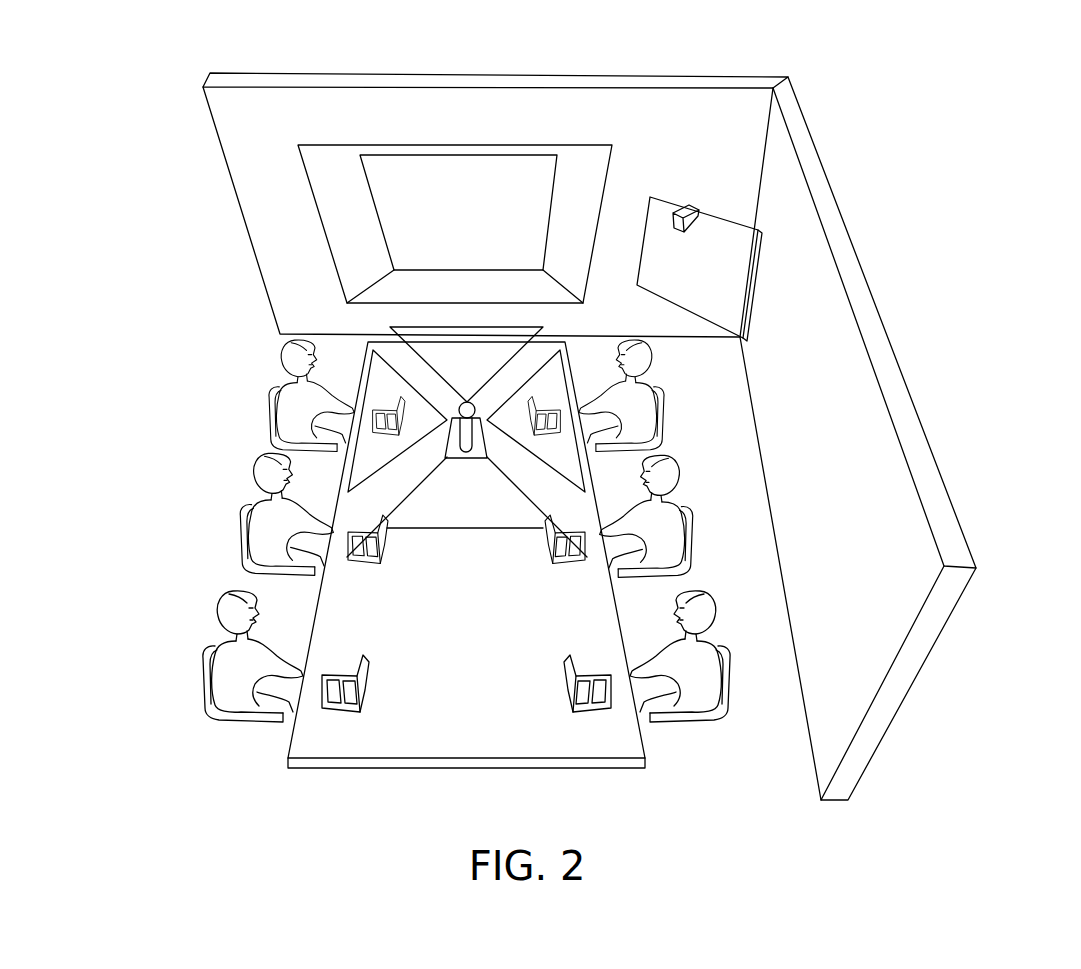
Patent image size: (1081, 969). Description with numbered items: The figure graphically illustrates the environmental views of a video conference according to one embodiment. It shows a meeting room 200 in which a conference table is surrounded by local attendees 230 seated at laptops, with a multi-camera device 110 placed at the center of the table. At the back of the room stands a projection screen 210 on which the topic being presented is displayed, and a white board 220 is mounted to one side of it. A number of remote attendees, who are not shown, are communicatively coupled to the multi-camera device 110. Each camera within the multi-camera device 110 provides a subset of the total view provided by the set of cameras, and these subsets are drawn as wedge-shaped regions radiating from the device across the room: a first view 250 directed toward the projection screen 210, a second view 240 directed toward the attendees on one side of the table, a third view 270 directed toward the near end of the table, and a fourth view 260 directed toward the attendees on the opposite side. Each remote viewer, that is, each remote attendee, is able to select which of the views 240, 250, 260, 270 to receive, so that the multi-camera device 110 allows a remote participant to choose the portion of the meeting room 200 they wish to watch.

The multi-camera device 110 is at (453, 422).
The meeting room 200 is at (937, 198).
The projection screen 210 is at (397, 170).
The white board 220 is at (662, 210).
The local attendees 230 is at (690, 480).
The view 240 is at (363, 460).
The view 250 is at (503, 355).
The view 260 is at (552, 447).
The view 270 is at (443, 483).